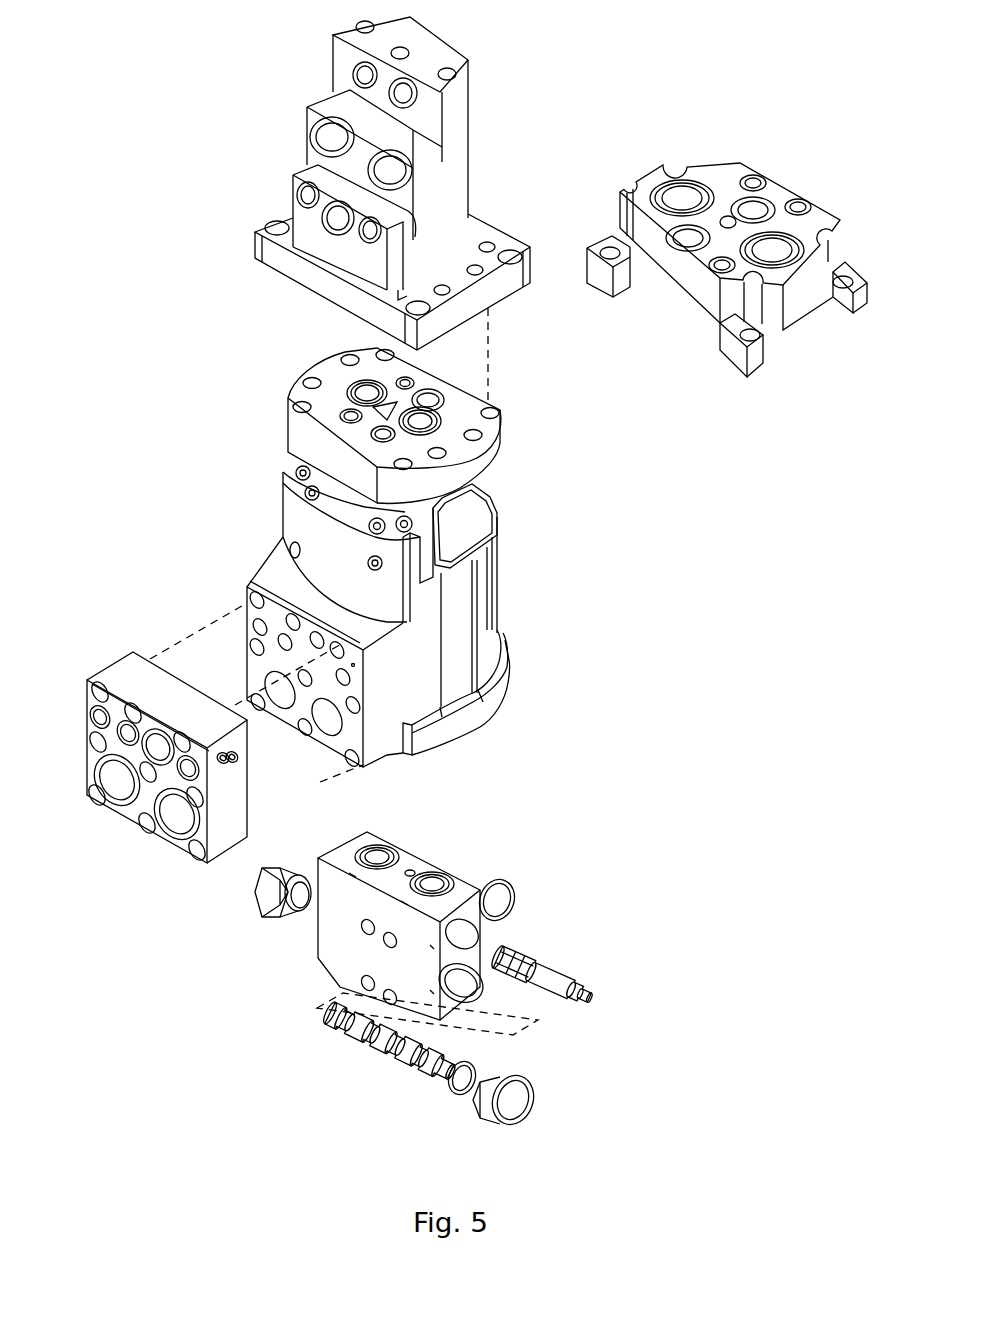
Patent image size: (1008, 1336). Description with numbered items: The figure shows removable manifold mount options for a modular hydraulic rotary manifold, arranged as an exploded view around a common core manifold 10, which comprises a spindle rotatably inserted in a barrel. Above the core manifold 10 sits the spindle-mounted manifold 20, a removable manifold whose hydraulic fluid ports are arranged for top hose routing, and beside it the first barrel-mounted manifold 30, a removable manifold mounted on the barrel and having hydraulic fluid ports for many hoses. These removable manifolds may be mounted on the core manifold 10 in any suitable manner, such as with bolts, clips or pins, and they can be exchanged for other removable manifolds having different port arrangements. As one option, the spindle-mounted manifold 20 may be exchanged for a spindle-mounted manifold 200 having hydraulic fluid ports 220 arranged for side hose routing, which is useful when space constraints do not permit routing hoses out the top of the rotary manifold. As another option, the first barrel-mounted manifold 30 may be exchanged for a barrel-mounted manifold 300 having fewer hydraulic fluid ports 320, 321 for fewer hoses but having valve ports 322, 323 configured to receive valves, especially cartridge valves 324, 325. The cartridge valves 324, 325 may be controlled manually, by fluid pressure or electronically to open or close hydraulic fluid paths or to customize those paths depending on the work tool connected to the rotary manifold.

The core manifold 10 is at (455, 613).
The spindle-mounted manifold 20 is at (810, 322).
The first barrel-mounted manifold 30 is at (135, 673).
The spindle-mounted manifold 200 is at (453, 118).
The hydraulic fluid ports 220 is at (363, 78).
The barrel-mounted manifold 300 is at (338, 935).
The hydraulic fluid port 320 is at (373, 850).
The hydraulic fluid port 321 is at (430, 873).
The valve port 322 is at (477, 1000).
The valve port 323 is at (470, 933).
The cartridge valve 324 is at (407, 1063).
The cartridge valve 325 is at (557, 972).